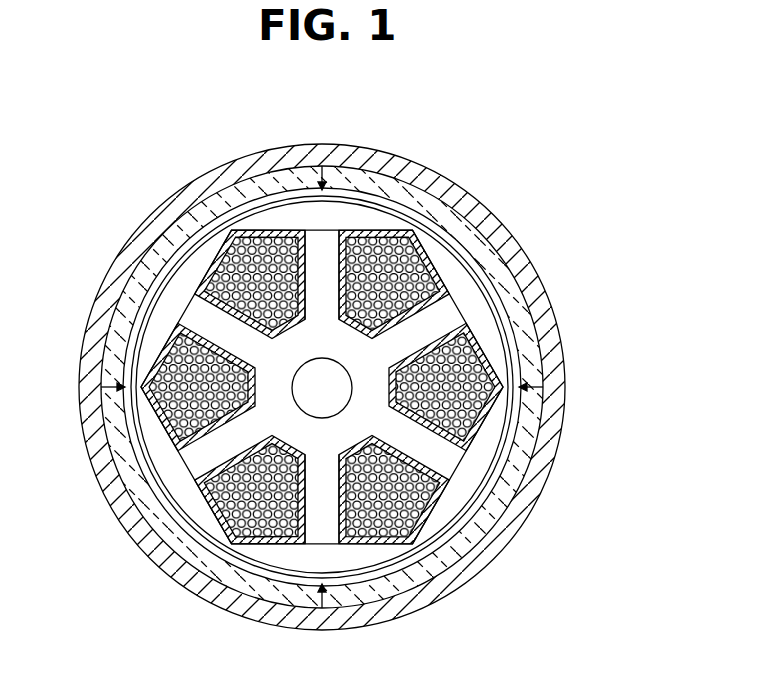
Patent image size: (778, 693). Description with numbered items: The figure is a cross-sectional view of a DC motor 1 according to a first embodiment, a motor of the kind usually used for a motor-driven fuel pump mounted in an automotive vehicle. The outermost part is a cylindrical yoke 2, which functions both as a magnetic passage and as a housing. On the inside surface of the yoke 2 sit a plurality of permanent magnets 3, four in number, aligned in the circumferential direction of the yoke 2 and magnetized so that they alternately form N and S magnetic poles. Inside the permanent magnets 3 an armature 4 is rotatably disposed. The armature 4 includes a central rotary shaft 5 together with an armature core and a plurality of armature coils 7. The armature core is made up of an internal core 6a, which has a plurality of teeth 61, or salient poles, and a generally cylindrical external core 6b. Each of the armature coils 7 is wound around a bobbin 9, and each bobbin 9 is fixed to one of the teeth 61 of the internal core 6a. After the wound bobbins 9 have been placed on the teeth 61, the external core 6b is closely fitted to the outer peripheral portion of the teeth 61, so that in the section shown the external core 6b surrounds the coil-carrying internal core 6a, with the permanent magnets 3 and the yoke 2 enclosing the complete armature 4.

The DC motor 1 is at (473, 158).
The yoke 2 is at (525, 268).
The permanent magnets 3 is at (495, 265).
The armature 4 is at (507, 332).
The rotary shaft 5 is at (338, 394).
The internal core 6a is at (300, 347).
The external core 6b is at (365, 215).
The teeth 61 is at (327, 253).
The armature coils 7 is at (203, 278).
The bobbin 9 is at (187, 273).